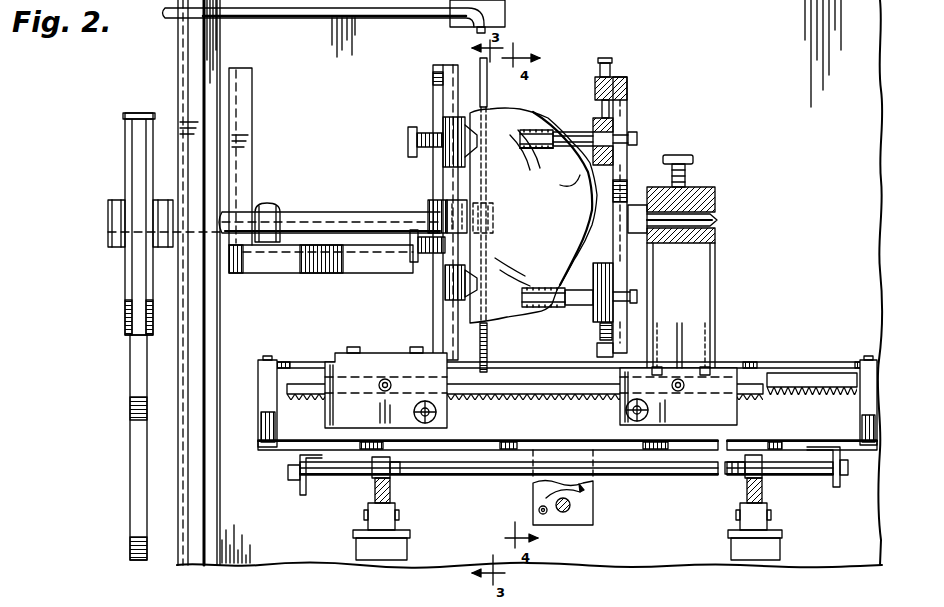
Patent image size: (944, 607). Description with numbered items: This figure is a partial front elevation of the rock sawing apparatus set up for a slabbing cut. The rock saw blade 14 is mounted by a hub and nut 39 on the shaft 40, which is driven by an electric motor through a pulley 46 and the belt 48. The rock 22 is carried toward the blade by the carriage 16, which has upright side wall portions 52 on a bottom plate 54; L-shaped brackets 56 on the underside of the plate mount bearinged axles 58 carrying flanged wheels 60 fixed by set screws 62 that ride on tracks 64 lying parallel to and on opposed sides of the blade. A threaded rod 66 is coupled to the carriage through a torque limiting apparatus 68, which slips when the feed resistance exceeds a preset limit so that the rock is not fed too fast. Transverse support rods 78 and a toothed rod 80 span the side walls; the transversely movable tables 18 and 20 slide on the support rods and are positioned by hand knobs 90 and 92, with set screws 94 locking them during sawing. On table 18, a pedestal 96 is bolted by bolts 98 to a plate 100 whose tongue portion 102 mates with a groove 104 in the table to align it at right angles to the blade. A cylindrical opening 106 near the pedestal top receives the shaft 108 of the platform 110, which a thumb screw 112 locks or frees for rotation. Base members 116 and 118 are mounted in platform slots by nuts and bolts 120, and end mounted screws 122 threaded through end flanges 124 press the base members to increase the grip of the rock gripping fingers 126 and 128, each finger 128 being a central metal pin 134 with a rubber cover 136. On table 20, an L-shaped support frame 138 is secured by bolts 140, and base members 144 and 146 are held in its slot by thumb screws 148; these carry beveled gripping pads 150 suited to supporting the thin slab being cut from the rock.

The rock saw blade 14 is at (487, 353).
The carriage 16 is at (254, 446).
The transversely movable table 18 is at (742, 366).
The transversely movable table 20 is at (345, 412).
The rock 22 is at (567, 216).
The nut 39 is at (497, 203).
The shaft 40 is at (324, 212).
The pulley 46 is at (125, 151).
The belt 48 is at (137, 385).
The upright side wall portions 52 is at (264, 410).
The bottom plate 54 is at (655, 450).
The L-shaped brackets 56 is at (300, 475).
The bearinged axles 58 is at (480, 476).
The flanged wheels 60 is at (372, 470).
The set screws 62 is at (402, 470).
The tracks 64 is at (399, 515).
The threaded rod 66 is at (593, 504).
The torque limiting apparatus 68 is at (533, 500).
The transverse support rods 78 is at (815, 375).
The toothed rod 80 is at (553, 400).
The knob 90 is at (622, 412).
The knob 92 is at (438, 415).
The set screws 94 is at (385, 379).
The pedestal 96 is at (716, 275).
The bolts 98 is at (658, 350).
The plate 100 is at (727, 360).
The tongue portion 102 is at (686, 343).
The groove 104 is at (684, 391).
The cylindrical opening 106 is at (716, 198).
The shaft 108 is at (718, 220).
The platform 110 is at (628, 155).
The thumb screw 112 is at (694, 162).
The base member 116 is at (593, 120).
The base member 118 is at (578, 280).
The nuts and bolts 120 is at (637, 136).
The end mounted screws 122 is at (610, 68).
The end flanges 124 is at (596, 78).
The rock gripping fingers 126 is at (568, 132).
The rock gripping fingers 128 is at (547, 308).
The central metal pin 134 is at (530, 131).
The cover 136 is at (537, 150).
The L-shaped support frame 138 is at (440, 318).
The bolts 140 is at (353, 347).
The base member 144 is at (447, 127).
The base member 146 is at (457, 262).
The thumb screws 148 is at (408, 138).
The beveled gripping pads 150 is at (473, 273).